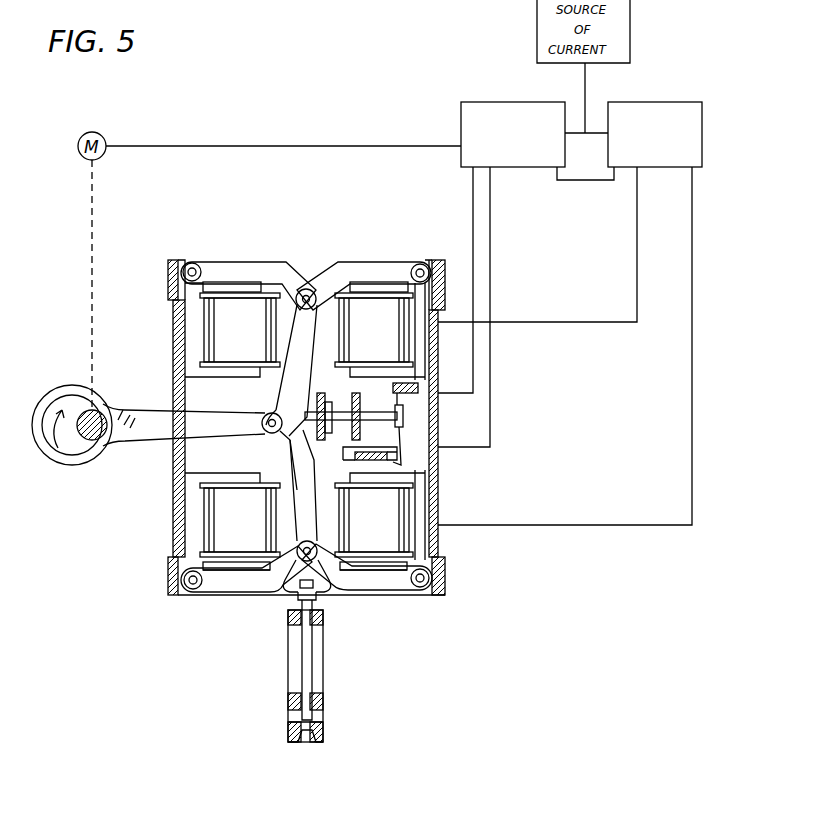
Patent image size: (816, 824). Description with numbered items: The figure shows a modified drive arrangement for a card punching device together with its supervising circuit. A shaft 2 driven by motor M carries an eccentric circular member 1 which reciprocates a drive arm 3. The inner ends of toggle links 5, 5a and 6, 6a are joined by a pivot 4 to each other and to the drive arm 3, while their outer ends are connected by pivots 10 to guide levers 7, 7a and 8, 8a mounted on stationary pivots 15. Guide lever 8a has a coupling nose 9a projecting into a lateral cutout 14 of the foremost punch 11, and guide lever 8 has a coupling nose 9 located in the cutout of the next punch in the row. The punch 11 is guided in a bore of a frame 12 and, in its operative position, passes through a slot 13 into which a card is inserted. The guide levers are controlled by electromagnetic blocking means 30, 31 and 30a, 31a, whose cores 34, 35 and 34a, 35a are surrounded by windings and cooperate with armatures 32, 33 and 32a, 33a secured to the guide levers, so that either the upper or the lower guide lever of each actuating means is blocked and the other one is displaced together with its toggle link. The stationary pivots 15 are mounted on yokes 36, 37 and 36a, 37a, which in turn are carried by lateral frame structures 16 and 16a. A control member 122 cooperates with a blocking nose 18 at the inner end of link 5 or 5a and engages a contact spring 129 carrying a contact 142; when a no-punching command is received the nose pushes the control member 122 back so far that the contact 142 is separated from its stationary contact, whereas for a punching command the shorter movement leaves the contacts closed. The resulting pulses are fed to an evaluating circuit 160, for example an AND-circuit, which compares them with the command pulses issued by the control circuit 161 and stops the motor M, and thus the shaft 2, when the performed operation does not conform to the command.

The eccentric circular member 1 is at (55, 456).
The shaft 2 is at (97, 441).
The drive arm 3 is at (120, 410).
The pivot 4 is at (265, 437).
The toggle link 5 is at (300, 322).
The first toggle link 5a is at (318, 292).
The toggle link 6 is at (290, 497).
The second toggle link 6a is at (298, 522).
The guide lever 7 is at (238, 268).
The guide lever 7a is at (378, 268).
The guide lever 8 is at (225, 596).
The guide lever 8a is at (378, 593).
The coupling nose 9 is at (281, 592).
The coupling nose 9a is at (296, 600).
The pivot 10 is at (306, 289).
The punch 11 is at (302, 680).
The frame 12 is at (318, 680).
The slot 13 is at (290, 713).
The lateral cutout 14 is at (318, 600).
The stationary pivot 15 is at (190, 262).
The lateral frame structure 16 is at (172, 327).
The lateral frame structure 16a is at (438, 345).
The blocking nose 18 is at (342, 445).
The electromagnetic blocking means 30 is at (205, 357).
The electromagnetic blocking means 30a is at (400, 315).
The electromagnetic blocking means 31 is at (205, 497).
The electromagnetic blocking means 31a is at (405, 537).
The armature 32 is at (250, 282).
The armature 32a is at (355, 282).
The armature 33 is at (210, 575).
The armature 33a is at (355, 575).
The core 34 is at (215, 283).
The core 34a is at (390, 283).
The core 35 is at (247, 575).
The core 35a is at (405, 582).
The yoke 36 is at (172, 296).
The yoke 36a is at (438, 368).
The yoke 37 is at (172, 540).
The yoke 37a is at (420, 493).
The control member 122 is at (338, 406).
The contact spring 129 is at (404, 413).
The contact 142 is at (396, 462).
The evaluating circuit 160 is at (518, 168).
The control circuit 161 is at (665, 168).